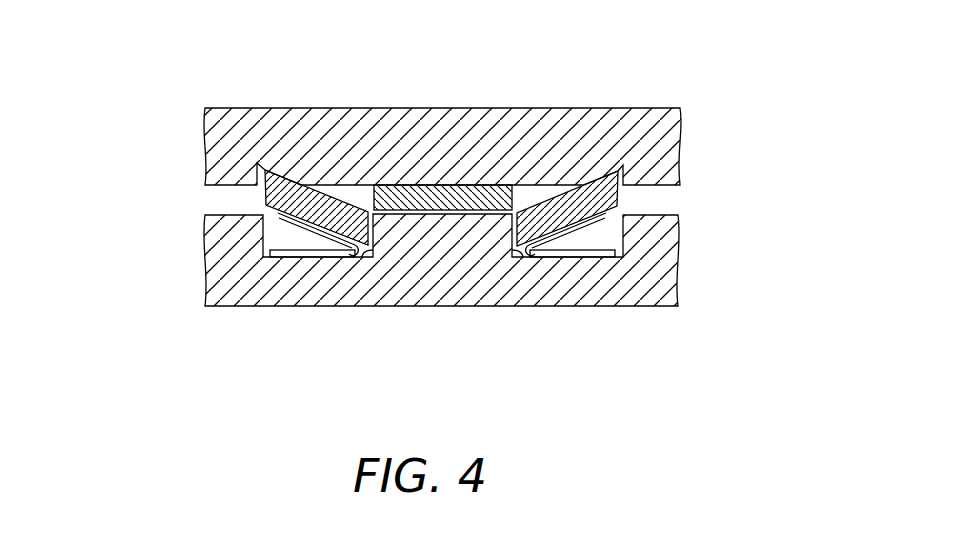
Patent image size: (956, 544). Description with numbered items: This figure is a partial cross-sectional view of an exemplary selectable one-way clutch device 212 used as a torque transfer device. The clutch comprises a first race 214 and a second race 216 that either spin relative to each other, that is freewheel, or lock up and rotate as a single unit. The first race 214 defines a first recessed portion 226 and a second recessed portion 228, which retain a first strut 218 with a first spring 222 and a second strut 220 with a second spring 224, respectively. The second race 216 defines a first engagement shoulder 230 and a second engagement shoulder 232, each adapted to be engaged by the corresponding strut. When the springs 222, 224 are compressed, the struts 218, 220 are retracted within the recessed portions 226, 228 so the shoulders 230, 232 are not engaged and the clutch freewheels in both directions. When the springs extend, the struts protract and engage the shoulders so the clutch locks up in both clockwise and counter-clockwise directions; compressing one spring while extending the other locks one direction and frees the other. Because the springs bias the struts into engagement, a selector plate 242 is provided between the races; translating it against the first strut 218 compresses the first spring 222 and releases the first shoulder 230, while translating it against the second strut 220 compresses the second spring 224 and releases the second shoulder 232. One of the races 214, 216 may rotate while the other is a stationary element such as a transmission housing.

The selectable one-way clutch device 212 is at (650, 108).
The first race 214 is at (640, 307).
The second race 216 is at (236, 108).
The first strut 218 is at (300, 188).
The second strut 220 is at (587, 188).
The first spring 222 is at (328, 237).
The second spring 224 is at (559, 235).
The first recessed portion 226 is at (377, 262).
The second recessed portion 228 is at (507, 260).
The first engagement shoulder 230 is at (263, 173).
The second engagement shoulder 232 is at (622, 172).
The selector plate 242 is at (410, 186).